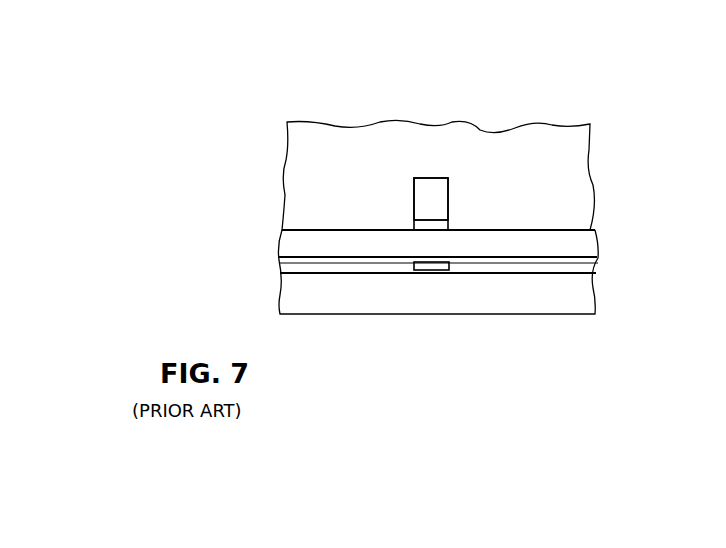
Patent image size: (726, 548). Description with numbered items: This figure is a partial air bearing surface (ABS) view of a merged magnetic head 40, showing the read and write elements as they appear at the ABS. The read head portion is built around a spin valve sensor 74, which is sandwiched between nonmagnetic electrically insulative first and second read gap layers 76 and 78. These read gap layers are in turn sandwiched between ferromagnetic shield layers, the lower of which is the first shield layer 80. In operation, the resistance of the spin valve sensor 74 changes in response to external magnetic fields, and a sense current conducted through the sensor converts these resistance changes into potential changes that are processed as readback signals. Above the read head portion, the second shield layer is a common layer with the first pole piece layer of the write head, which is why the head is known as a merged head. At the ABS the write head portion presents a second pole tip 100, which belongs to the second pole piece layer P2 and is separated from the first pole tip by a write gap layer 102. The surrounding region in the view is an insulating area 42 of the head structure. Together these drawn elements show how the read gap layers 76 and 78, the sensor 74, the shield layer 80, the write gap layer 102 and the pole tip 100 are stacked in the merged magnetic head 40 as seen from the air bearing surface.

The merged magnetic head 40 is at (610, 138).
The insulating layer 42 is at (290, 150).
The first shield layer 80 is at (584, 296).
The first read gap layer 76 is at (343, 273).
The second read gap layer 78 is at (555, 262).
The spin valve sensor 74 is at (432, 270).
The write gap layer 102 is at (432, 222).
The P2 region P2 is at (440, 204).
The second pole tip 100 is at (437, 186).